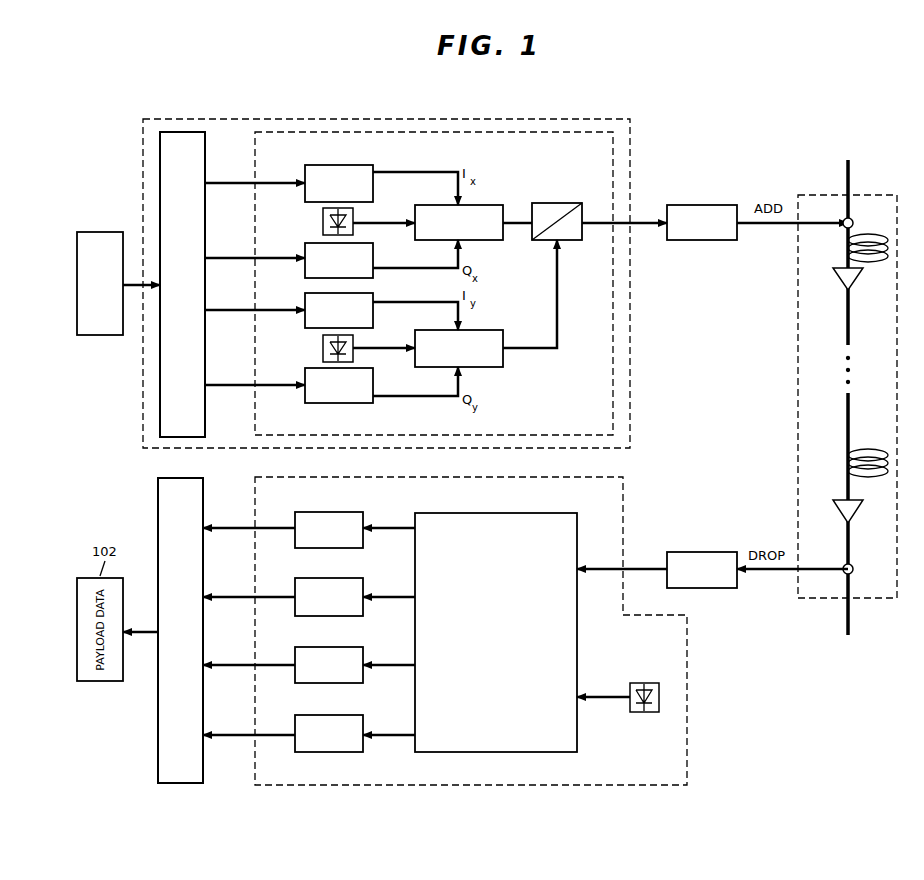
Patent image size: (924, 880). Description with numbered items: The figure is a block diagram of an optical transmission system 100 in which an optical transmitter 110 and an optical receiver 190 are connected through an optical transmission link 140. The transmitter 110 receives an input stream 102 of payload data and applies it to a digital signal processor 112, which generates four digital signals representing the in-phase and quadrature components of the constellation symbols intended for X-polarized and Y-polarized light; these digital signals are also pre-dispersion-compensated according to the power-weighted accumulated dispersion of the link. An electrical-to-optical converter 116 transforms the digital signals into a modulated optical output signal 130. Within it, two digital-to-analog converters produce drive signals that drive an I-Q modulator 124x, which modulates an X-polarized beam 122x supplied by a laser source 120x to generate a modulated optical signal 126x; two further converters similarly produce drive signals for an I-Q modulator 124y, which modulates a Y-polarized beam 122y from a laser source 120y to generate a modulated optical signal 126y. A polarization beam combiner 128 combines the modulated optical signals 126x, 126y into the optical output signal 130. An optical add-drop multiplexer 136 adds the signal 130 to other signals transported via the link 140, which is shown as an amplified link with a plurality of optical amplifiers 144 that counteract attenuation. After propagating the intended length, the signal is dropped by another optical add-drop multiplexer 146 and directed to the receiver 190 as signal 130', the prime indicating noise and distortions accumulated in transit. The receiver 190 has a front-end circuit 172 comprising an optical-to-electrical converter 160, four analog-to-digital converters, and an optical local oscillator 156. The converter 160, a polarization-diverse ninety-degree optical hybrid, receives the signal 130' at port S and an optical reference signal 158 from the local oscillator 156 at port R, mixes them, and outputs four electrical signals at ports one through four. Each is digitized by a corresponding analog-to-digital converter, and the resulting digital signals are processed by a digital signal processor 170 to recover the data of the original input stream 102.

The optical transmission system 100 is at (216, 82).
The input stream of payload data 102 is at (100, 230).
The optical transmitter 110 is at (475, 119).
The digital signal processor 112 is at (165, 132).
The electrical-to-optical converter 116 is at (598, 132).
The laser source 120x is at (323, 218).
The laser source 120y is at (323, 345).
The X-polarized beam of light 122x is at (383, 220).
The Y-polarized beam of light 122y is at (390, 351).
The I-Q modulator 124x is at (490, 240).
The I-Q modulator 124y is at (490, 367).
The modulated optical signal 126x is at (517, 220).
The modulated optical signal 126y is at (557, 352).
The polarization beam combiner 128 is at (558, 243).
The optical output signal 130 is at (645, 198).
The received optical signal 130' is at (644, 554).
The optical add-drop multiplexer 136 is at (704, 241).
The optical transmission link 140 is at (872, 195).
The optical amplifiers 144 is at (840, 283).
The optical add-drop multiplexer 146 is at (704, 589).
The optical local oscillator 156 is at (602, 695).
The optical reference signal 158 is at (646, 713).
The optical-to-electrical converter 160 is at (525, 513).
The digital signal processor 170 is at (168, 784).
The front-end circuit 172 is at (592, 788).
The optical receiver 190 is at (258, 826).